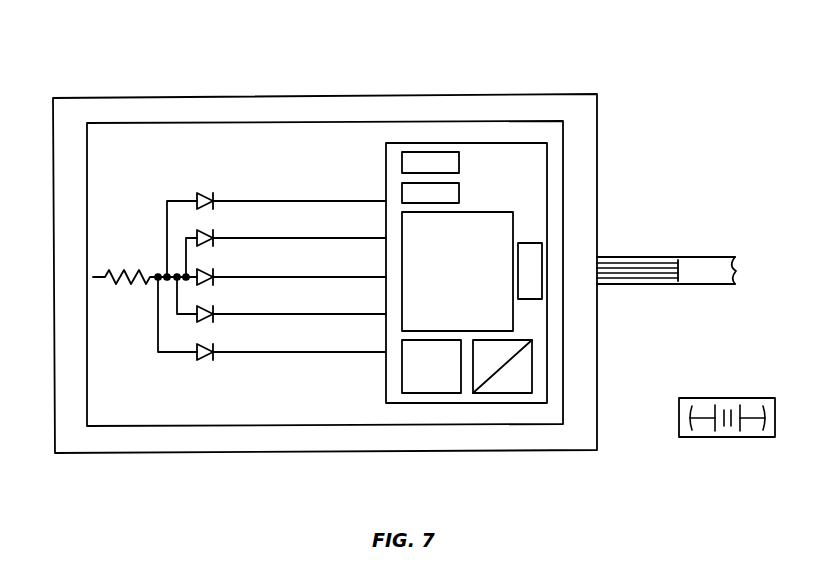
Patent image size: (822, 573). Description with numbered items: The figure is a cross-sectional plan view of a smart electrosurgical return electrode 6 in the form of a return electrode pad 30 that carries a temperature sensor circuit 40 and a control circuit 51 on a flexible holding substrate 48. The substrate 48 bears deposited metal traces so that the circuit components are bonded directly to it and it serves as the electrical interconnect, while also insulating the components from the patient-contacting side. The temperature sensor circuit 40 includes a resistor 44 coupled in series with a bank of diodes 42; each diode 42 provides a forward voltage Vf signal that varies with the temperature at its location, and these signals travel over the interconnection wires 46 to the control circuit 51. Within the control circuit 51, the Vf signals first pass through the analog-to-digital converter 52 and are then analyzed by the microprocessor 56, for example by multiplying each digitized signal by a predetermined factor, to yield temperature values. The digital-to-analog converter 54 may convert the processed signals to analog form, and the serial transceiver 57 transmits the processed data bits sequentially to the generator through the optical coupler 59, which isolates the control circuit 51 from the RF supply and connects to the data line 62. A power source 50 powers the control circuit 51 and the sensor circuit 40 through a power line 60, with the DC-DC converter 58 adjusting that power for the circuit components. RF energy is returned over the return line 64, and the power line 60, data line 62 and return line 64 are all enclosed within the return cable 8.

The return electrode 6 is at (122, 63).
The return cable 8 is at (720, 253).
The return electrode pad 30 is at (437, 94).
The temperature sensor circuit 40 is at (155, 250).
The diodes 42 is at (190, 232).
The resistors 44 is at (112, 295).
The interconnection wires 46 is at (265, 237).
The flexible holding substrate 48 is at (340, 426).
The power source 50 is at (715, 398).
The control circuit 51 is at (550, 128).
The analog-to-digital converter 52 is at (459, 166).
The digital-to-analog converter 54 is at (459, 196).
The microprocessor 56 is at (513, 312).
The serial transceiver 57 is at (432, 393).
The DC-DC converter 58 is at (504, 393).
The optical coupler 59 is at (530, 243).
The power line 60 is at (678, 262).
The data line 62 is at (650, 275).
The return line 64 is at (625, 281).